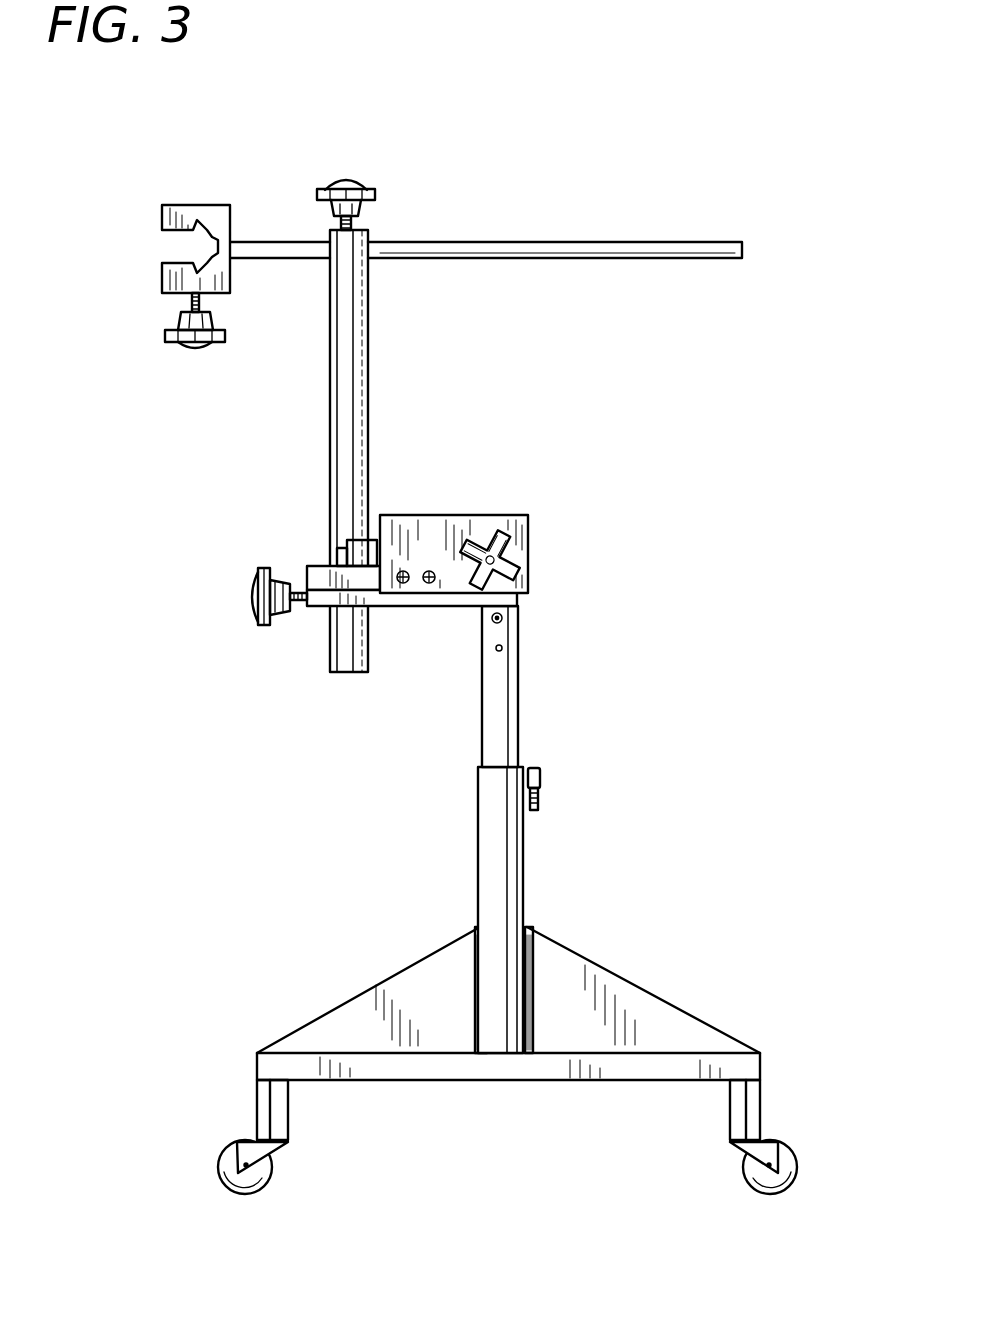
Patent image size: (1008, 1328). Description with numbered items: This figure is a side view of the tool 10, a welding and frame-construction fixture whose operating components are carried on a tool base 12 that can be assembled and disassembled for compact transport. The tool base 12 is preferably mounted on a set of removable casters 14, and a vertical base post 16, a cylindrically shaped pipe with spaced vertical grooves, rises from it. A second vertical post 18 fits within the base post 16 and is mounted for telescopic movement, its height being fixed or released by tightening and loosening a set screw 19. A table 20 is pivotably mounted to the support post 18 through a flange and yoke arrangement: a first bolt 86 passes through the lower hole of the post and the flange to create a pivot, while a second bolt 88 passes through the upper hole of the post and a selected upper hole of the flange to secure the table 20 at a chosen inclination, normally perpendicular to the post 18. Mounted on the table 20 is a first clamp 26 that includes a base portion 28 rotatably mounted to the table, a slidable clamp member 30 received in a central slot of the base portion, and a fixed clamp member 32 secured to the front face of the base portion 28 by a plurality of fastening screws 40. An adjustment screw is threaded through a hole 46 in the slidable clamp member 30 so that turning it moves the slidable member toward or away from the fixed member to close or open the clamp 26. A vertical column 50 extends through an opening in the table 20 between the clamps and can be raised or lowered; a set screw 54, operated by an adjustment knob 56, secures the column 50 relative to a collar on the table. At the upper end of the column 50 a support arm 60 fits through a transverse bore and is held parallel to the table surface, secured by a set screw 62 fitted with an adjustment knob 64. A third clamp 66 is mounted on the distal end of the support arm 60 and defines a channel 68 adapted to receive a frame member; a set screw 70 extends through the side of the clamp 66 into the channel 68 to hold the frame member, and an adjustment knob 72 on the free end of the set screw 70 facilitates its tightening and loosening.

The tool 10 is at (763, 700).
The tool base 12 is at (680, 1010).
The casters 14 is at (223, 1162).
The vertical base post 16 is at (510, 855).
The second vertical post 18 is at (507, 707).
The set screw 19 is at (540, 790).
The table 20 is at (377, 600).
The first clamp 26 is at (540, 522).
The base portion 28 is at (320, 577).
The slidable clamp member 30 is at (358, 550).
The fixed clamp member 32 is at (440, 530).
The fastening screws 40 is at (430, 583).
The hole 46 is at (520, 573).
The vertical column 50 is at (352, 358).
The set screw 54 is at (297, 607).
The adjustment knob 56 is at (253, 603).
The support arm 60 is at (477, 252).
The set screw 62 is at (367, 225).
The adjustment knob 64 is at (348, 180).
The third clamp 66 is at (180, 212).
The channel 68 is at (175, 255).
The set screw 70 is at (203, 302).
The adjustment knob 72 is at (225, 337).
The first bolt 86 is at (502, 662).
The second bolt 88 is at (503, 625).